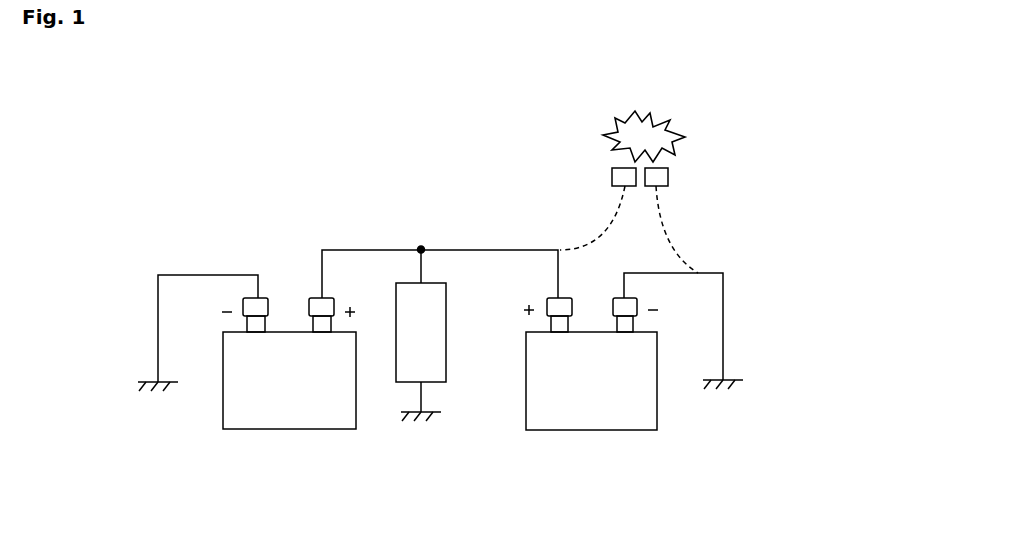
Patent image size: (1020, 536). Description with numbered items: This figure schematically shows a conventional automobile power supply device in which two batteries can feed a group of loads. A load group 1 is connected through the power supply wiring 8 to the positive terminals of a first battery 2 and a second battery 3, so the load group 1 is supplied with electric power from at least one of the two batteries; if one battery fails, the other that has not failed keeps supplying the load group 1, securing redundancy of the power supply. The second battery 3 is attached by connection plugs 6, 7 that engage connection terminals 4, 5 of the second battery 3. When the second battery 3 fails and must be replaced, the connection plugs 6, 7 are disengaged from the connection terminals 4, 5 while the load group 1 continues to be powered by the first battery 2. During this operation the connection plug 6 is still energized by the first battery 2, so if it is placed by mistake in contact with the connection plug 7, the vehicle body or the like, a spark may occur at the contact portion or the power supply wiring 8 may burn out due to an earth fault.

The load group 1 is at (446, 303).
The first battery 2 is at (223, 415).
The second battery 3 is at (657, 413).
The connection terminal 4 is at (570, 323).
The connection terminal 5 is at (635, 321).
The connection plug 6 is at (612, 177).
The connection plug 7 is at (668, 177).
The power supply wiring 8 is at (375, 250).